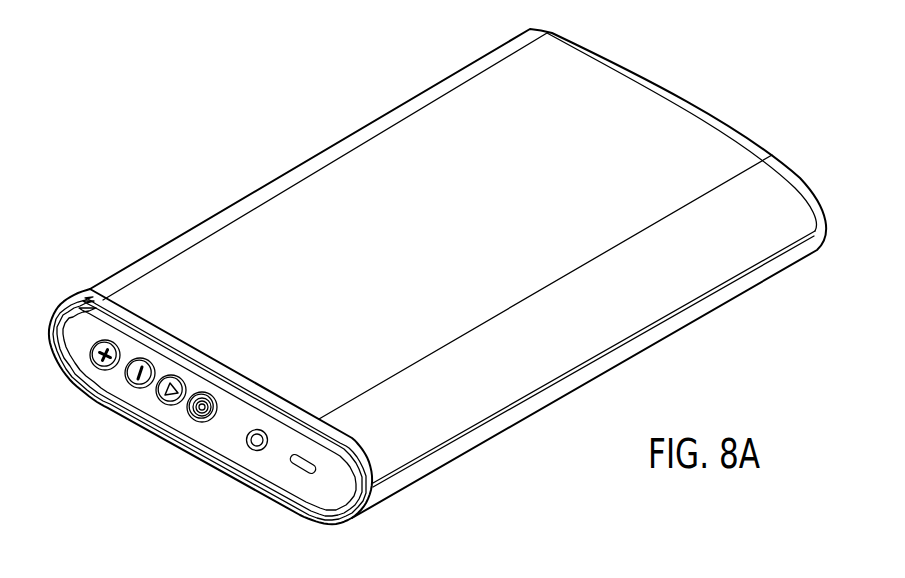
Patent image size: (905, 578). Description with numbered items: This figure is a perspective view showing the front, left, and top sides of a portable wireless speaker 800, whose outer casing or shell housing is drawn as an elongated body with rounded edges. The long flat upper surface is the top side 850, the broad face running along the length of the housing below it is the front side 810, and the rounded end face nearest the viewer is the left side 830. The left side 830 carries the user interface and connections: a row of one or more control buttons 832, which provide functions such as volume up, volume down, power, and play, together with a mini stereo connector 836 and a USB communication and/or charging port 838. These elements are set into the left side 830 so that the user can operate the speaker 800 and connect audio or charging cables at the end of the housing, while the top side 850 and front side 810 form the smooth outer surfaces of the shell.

The portable wireless speaker 800 is at (652, 78).
The front side 810 is at (517, 402).
The left side 830 is at (230, 443).
The control buttons 832 is at (112, 343).
The mini stereo connector 836 is at (260, 452).
The USB communication and/or charging port 838 is at (305, 468).
The top side 850 is at (369, 162).